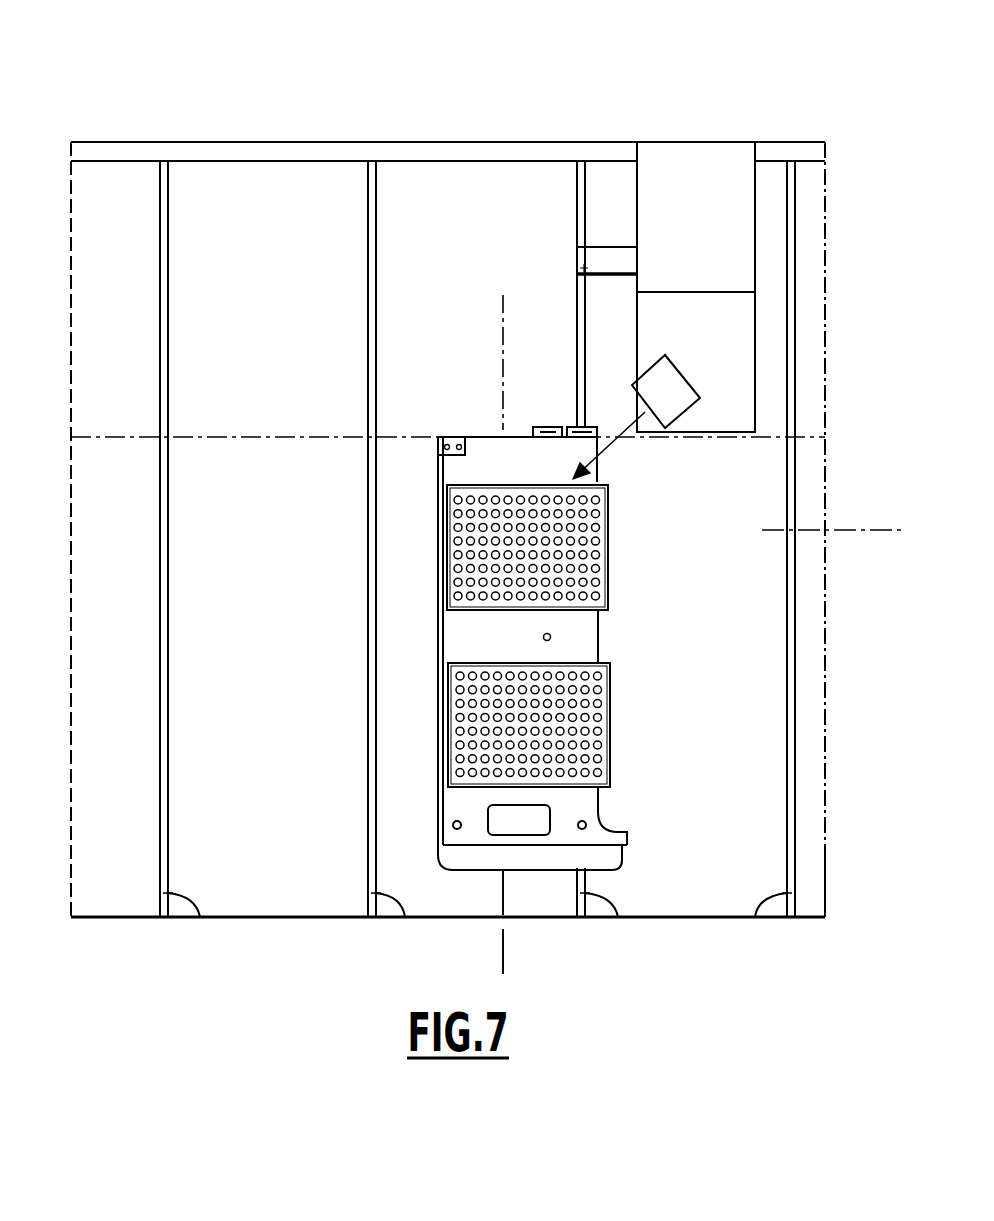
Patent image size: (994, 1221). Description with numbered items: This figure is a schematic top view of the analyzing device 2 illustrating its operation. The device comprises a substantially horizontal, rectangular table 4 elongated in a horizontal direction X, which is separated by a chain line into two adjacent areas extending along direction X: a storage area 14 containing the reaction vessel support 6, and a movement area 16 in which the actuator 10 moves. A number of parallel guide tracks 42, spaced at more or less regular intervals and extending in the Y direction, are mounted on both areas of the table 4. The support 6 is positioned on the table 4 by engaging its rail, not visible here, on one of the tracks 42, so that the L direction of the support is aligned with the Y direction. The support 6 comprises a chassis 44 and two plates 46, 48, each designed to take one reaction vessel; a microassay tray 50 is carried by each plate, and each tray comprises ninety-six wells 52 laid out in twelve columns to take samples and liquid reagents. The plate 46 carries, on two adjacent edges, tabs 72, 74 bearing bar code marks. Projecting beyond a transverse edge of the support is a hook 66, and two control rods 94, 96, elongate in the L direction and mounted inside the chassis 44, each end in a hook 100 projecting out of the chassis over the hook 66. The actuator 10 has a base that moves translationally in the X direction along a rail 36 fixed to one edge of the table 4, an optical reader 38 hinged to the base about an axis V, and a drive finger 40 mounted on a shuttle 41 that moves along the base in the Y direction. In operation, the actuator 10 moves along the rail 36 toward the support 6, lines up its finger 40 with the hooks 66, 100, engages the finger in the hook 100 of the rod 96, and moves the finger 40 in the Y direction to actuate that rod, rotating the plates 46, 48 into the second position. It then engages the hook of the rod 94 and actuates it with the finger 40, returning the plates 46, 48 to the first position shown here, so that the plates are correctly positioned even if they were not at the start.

The analyzing device 2 is at (388, 109).
The table 4 is at (298, 895).
The reaction vessel support 6 is at (492, 876).
The actuator 10 is at (696, 287).
The storage area 14 is at (268, 677).
The movement area 16 is at (268, 299).
The rail 36 is at (445, 152).
The optical reader 38 is at (668, 366).
The drive finger 40 is at (575, 263).
The shuttle 41 is at (606, 270).
The guide tracks 42 is at (748, 932).
The chassis 44 is at (520, 860).
The plate 46 is at (441, 748).
The plate 48 is at (441, 560).
The microassay tray 50 is at (598, 658).
The wells 52 is at (595, 580).
The hook 66 is at (568, 441).
The tab 72 is at (596, 478).
The tab 74 is at (440, 532).
The control rod 94 is at (560, 425).
The control rod 96 is at (540, 432).
The hook 100 is at (553, 428).
The axis V is at (664, 392).
The L direction L is at (503, 302).
The X direction X is at (878, 527).
The Y direction Y is at (825, 603).